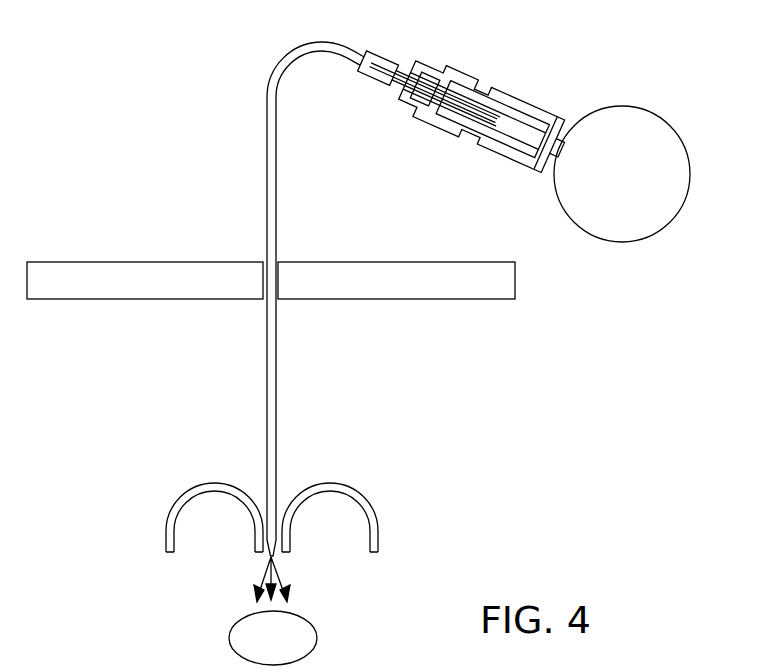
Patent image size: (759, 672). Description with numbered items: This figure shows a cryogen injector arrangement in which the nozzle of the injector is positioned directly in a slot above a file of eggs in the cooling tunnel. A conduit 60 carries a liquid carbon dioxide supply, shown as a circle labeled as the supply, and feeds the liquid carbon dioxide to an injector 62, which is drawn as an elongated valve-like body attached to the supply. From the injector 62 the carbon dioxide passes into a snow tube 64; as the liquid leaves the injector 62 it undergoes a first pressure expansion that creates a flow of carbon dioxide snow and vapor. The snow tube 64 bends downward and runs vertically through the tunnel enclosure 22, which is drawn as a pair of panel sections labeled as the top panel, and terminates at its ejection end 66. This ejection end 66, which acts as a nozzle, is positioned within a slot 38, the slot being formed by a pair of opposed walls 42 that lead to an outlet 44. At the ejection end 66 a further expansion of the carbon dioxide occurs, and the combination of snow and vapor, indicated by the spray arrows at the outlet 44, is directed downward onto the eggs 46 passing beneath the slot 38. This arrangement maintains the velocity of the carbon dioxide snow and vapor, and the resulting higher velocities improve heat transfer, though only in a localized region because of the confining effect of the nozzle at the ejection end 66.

The tunnel enclosure 22 is at (358, 263).
The slot 38 is at (295, 472).
The opposed walls 42 is at (255, 527).
The outlet 44 is at (282, 555).
The eggs 46 is at (317, 630).
The conduit 60 is at (650, 125).
The injector 62 is at (492, 90).
The snow tube 64 is at (276, 161).
The ejection end 66 is at (268, 554).